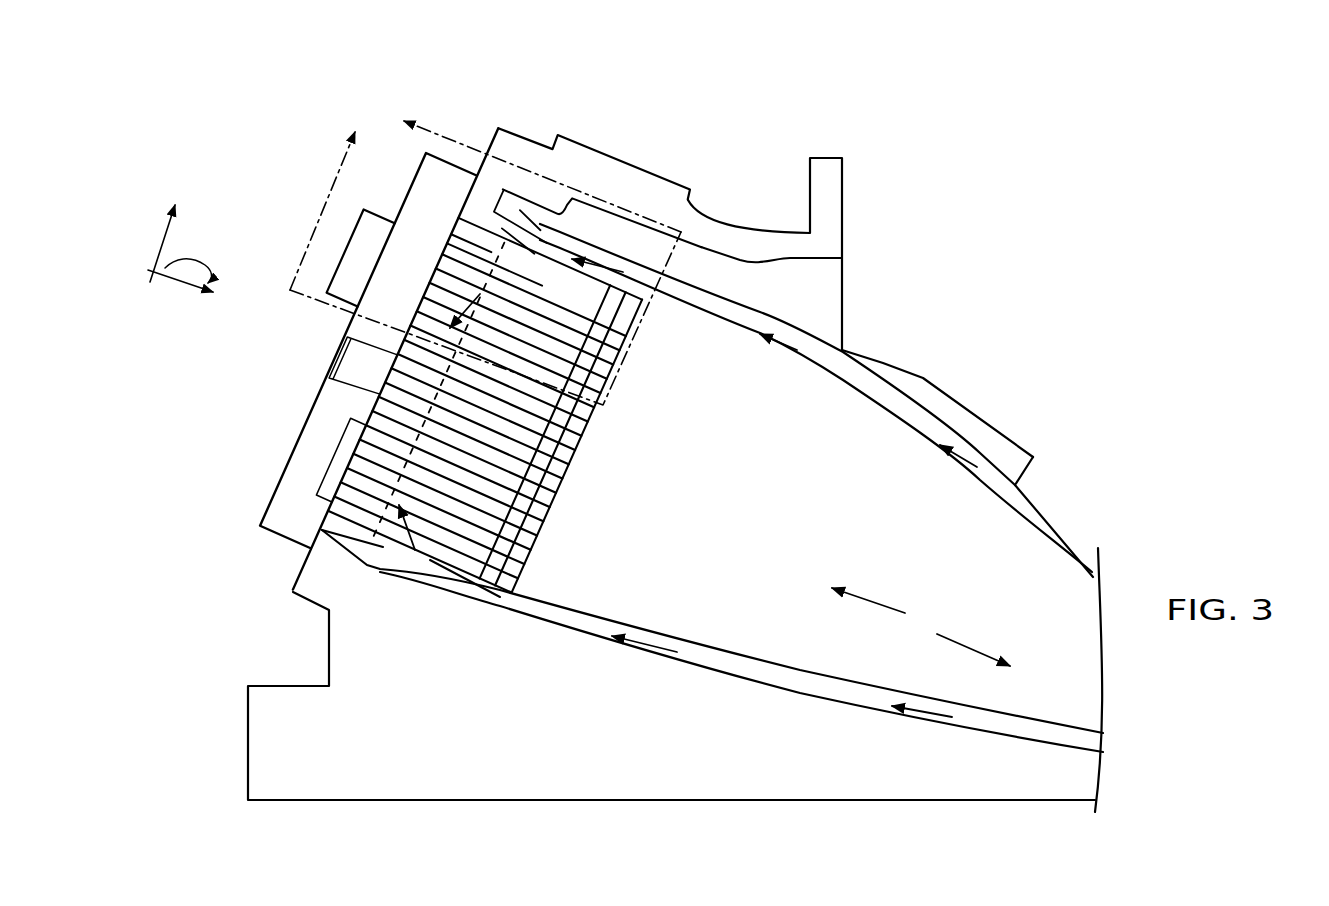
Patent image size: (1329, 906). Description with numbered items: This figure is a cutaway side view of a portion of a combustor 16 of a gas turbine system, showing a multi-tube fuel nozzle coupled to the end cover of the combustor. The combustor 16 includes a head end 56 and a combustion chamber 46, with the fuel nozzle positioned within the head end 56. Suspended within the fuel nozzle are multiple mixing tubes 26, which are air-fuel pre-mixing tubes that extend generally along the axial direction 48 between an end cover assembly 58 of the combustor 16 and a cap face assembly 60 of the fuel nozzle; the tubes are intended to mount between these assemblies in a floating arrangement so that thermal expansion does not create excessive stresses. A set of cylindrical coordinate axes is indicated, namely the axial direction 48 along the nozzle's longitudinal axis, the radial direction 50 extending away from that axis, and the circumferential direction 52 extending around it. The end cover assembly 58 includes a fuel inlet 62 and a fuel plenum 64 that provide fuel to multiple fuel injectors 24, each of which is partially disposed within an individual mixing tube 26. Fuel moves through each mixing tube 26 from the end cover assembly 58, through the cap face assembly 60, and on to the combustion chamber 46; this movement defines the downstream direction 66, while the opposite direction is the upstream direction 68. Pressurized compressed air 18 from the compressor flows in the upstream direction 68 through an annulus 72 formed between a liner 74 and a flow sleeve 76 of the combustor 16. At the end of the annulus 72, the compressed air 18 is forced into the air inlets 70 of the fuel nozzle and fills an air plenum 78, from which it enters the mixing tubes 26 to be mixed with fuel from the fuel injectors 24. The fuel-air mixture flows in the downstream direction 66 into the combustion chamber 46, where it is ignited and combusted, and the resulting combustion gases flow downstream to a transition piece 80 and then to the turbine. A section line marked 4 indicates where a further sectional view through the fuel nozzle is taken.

The combustor 16 is at (968, 255).
The pressurized compressed air 18 is at (455, 314).
The fuel injectors 24 is at (462, 275).
The mixing tubes 26 is at (548, 328).
The combustion chamber 46 is at (884, 495).
The axial direction 48 is at (169, 301).
The radial direction 50 is at (146, 226).
The circumferential direction 52 is at (202, 253).
The head end 56 is at (632, 97).
The end cover assembly 58 is at (282, 538).
The cap face assembly 60 is at (516, 528).
The fuel inlet 62 is at (340, 250).
The fuel plenum 64 is at (404, 312).
The downstream direction 66 is at (968, 648).
The upstream direction 68 is at (860, 602).
The air inlets 70 is at (555, 263).
The annulus 72 is at (822, 372).
The liner 74 is at (720, 333).
The flow sleeve 76 is at (882, 362).
The air plenum 78 is at (513, 257).
The transition piece 80 is at (1058, 528).
The section line 4- 4 is at (485, 245).